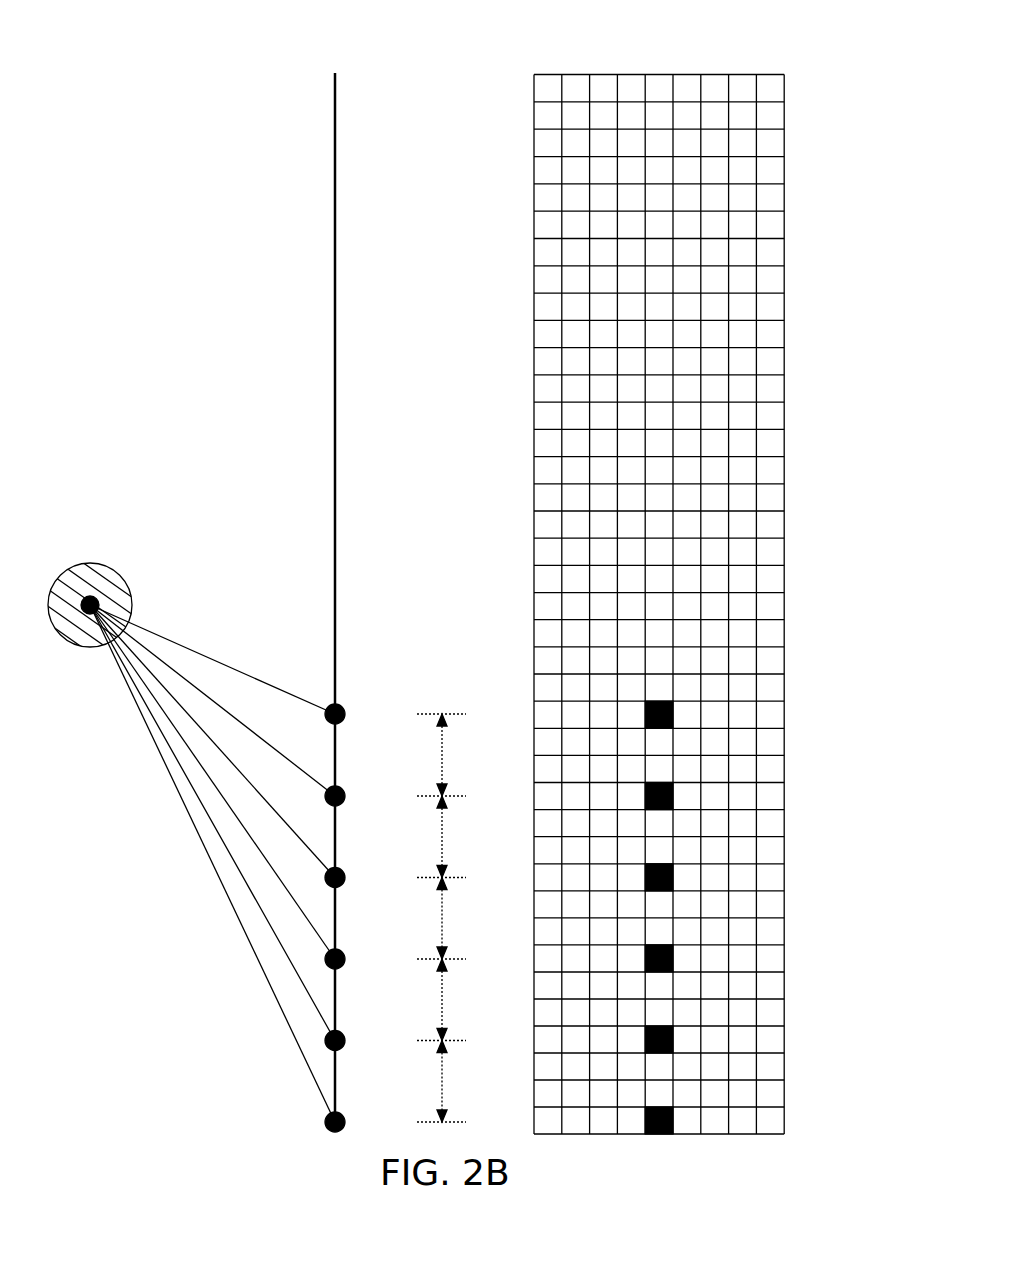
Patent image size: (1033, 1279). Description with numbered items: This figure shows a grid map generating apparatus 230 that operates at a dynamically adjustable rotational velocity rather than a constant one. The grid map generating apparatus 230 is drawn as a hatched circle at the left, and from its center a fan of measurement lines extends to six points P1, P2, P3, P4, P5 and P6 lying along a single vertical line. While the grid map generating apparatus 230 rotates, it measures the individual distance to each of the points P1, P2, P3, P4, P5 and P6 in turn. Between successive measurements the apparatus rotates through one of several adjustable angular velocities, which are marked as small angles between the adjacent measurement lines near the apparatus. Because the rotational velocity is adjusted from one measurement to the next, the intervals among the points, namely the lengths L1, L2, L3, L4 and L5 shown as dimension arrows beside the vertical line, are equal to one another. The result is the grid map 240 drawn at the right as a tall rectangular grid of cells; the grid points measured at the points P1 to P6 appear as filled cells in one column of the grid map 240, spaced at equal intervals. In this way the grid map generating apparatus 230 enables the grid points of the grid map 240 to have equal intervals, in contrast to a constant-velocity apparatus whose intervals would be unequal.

The grid map generating apparatus 230 is at (93, 563).
The grid map 240 is at (657, 74).
The point P1 is at (235, 870).
The point P2 is at (235, 830).
The point P3 is at (235, 789).
The point P4 is at (235, 748).
The point P5 is at (235, 707).
The point P6 is at (235, 666).
The length L1 is at (434, 1081).
The length L2 is at (434, 1000).
The length L3 is at (434, 918).
The length L4 is at (434, 837).
The length L5 is at (434, 755).